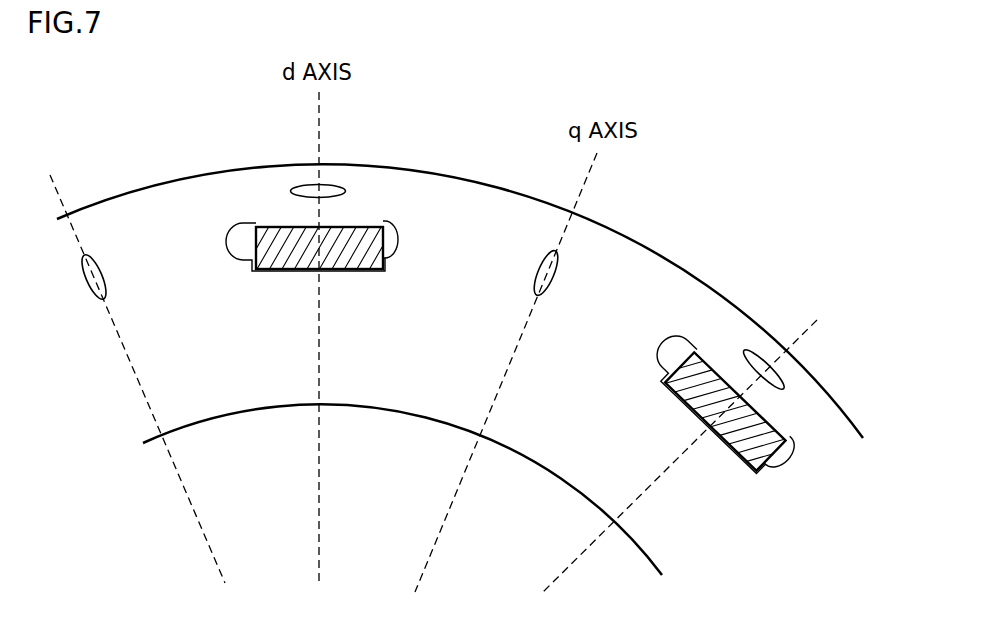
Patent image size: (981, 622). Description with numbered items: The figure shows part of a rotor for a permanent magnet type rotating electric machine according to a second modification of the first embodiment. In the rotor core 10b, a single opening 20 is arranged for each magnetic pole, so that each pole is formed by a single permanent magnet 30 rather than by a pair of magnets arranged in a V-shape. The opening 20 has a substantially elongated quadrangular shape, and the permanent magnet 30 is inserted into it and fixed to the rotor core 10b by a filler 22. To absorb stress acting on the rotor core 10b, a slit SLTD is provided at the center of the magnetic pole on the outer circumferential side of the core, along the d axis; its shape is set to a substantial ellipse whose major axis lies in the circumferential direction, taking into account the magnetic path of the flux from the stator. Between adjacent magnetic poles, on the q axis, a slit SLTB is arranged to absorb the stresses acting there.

The rotor core 10b is at (242, 382).
The opening 20 is at (283, 275).
The filler 22 is at (398, 237).
The permanent magnet 30 is at (359, 258).
The slit SLTD is at (328, 186).
The slit SLTB is at (540, 257).